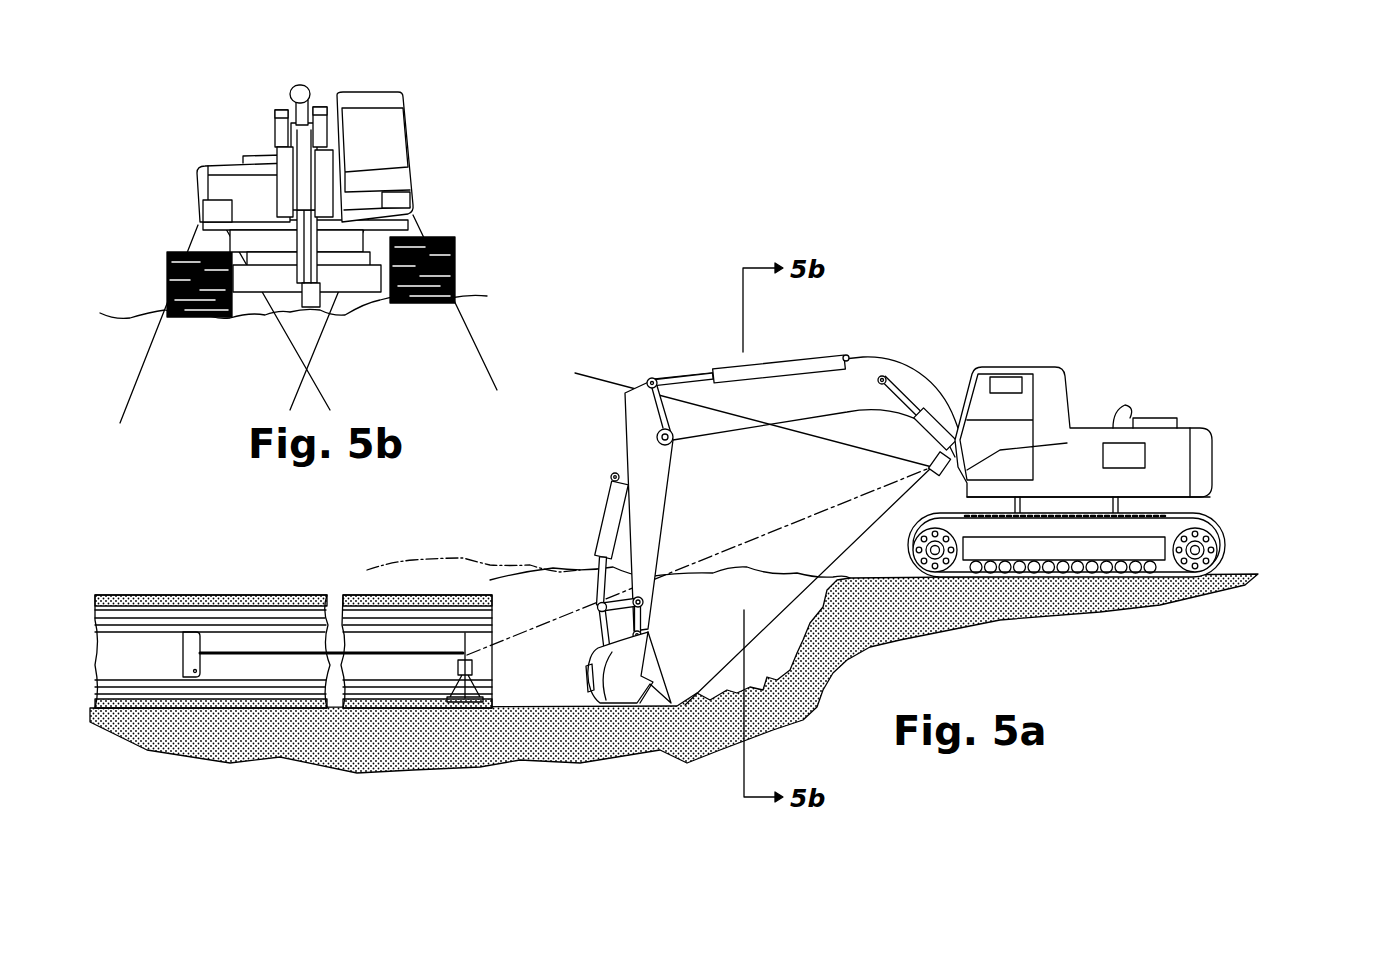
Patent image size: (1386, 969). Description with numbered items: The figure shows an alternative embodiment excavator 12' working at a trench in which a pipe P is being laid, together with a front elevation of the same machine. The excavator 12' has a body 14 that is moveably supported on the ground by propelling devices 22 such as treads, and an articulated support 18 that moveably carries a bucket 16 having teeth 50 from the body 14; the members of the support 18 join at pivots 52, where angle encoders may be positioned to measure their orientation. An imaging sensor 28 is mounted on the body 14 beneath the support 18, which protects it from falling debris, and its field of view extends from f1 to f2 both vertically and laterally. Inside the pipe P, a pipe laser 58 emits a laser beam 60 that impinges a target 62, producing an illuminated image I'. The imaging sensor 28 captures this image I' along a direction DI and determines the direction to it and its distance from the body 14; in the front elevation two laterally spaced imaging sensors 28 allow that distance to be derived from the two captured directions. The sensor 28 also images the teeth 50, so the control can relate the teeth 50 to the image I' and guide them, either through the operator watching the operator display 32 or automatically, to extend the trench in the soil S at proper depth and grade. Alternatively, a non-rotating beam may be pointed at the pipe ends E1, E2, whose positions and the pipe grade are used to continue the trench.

In FIG. 5A, the excavator 12' is at (910, 497).
In FIG. 5B, the excavator 12' is at (304, 173).
In FIG. 5A, the body 14 is at (1112, 410).
In FIG. 5B, the body 14 is at (410, 140).
In FIG. 5A, the bucket 16 is at (590, 683).
In FIG. 5A, the support 18 is at (655, 374).
In FIG. 5B, the support 18 is at (278, 130).
In FIG. 5A, the propelling devices 22 is at (1222, 532).
In FIG. 5B, the propelling devices 22 is at (167, 285).
In FIG. 5A, the imaging sensor 28 is at (932, 482).
In FIG. 5B, the imaging sensor 28 is at (203, 195).
In FIG. 5A, the operator display 32 is at (1005, 378).
In FIG. 5A, the teeth 50 is at (678, 698).
In FIG. 5A, the pivot 52 is at (657, 438).
In FIG. 5A, the pipe laser 58 is at (160, 632).
In FIG. 5A, the laser beam 60 is at (232, 652).
In FIG. 5A, the target 62 is at (465, 640).
In FIG. 5A, the starting end of pipe E1 is at (95, 598).
In FIG. 5A, the end of pipe E2 is at (492, 630).
In FIG. 5A, the pipe P is at (380, 592).
In FIG. 5A, the illuminated image I' is at (505, 621).
In FIG. 5A, the soil S is at (545, 712).
In FIG. 5A, the field of view limit f1 is at (830, 442).
In FIG. 5B, the field of view limit f1 is at (348, 368).
In FIG. 5A, the field of view limit f2 is at (856, 572).
In FIG. 5B, the field of view limit f2 is at (520, 332).
In FIG. 5A, the direction to image DI is at (733, 540).